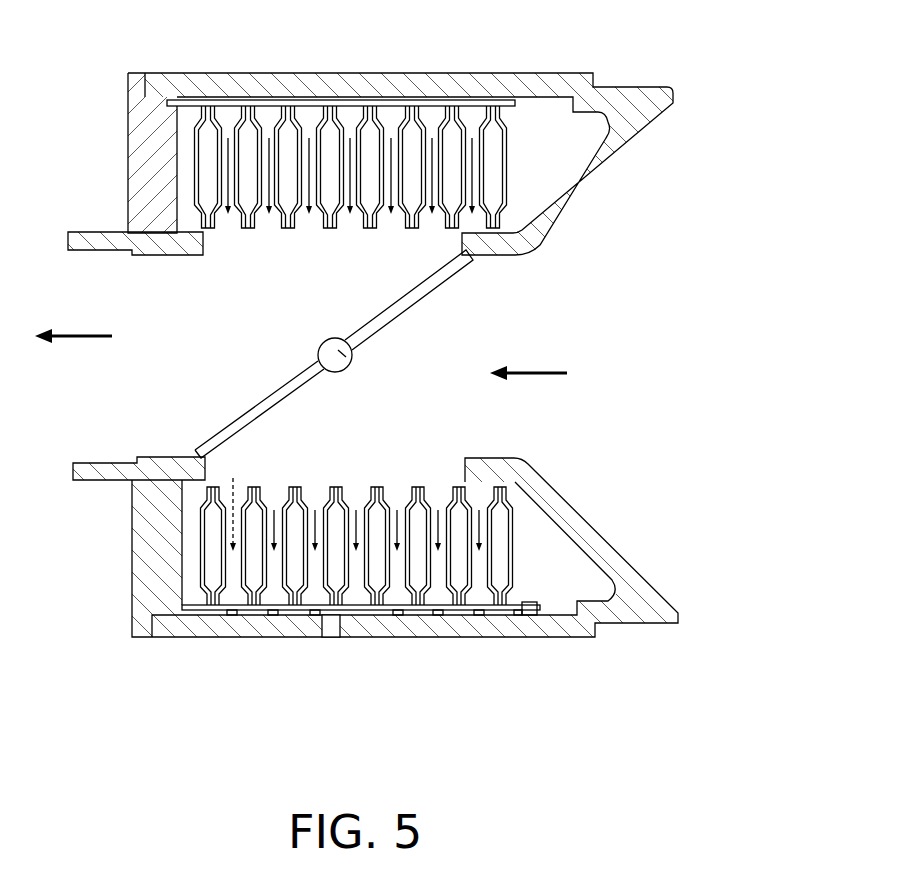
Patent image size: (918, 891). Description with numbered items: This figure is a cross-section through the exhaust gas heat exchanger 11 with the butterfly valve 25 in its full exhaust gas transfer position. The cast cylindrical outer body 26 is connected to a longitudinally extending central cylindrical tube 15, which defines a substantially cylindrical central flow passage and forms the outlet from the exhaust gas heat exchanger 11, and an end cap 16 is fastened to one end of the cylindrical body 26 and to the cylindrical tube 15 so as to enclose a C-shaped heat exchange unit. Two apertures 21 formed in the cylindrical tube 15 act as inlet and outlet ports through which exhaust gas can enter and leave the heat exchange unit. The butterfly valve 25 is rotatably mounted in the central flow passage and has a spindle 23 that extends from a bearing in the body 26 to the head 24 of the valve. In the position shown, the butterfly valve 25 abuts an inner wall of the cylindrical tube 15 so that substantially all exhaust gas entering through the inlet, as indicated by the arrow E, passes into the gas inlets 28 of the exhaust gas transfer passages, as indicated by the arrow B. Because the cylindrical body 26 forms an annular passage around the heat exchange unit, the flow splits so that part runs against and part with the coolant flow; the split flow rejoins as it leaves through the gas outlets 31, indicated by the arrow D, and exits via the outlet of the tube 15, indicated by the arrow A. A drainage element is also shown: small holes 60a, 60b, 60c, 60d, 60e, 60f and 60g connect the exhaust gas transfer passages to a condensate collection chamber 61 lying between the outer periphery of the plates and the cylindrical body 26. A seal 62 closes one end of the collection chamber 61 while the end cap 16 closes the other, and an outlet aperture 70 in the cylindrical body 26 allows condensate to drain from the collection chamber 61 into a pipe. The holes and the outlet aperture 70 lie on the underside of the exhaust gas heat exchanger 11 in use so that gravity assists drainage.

The exhaust gas heat exchanger 11 is at (118, 79).
The end cap 16 is at (128, 97).
The central cylindrical tube 15 is at (95, 231).
The aperture 21 is at (203, 256).
The gas outlet 31 is at (315, 224).
The arrow D is at (352, 218).
The arrow A is at (113, 334).
The arrow E is at (540, 372).
The butterfly valve 25 is at (246, 398).
The spindle 23 is at (340, 358).
The head 24 is at (462, 277).
The cylindrical outer body 26 is at (577, 640).
The outlet aperture 70 is at (333, 638).
The condensate collection chamber 61 is at (175, 615).
The gas inlet 28 is at (273, 490).
The arrow B is at (234, 504).
The small hole 60a is at (230, 616).
The small hole 60b is at (273, 616).
The small hole 60c is at (313, 616).
The small hole 60d is at (398, 616).
The small hole 60e is at (440, 616).
The small hole 60f is at (480, 616).
The small hole 60g is at (519, 616).
The seal 62 is at (535, 617).